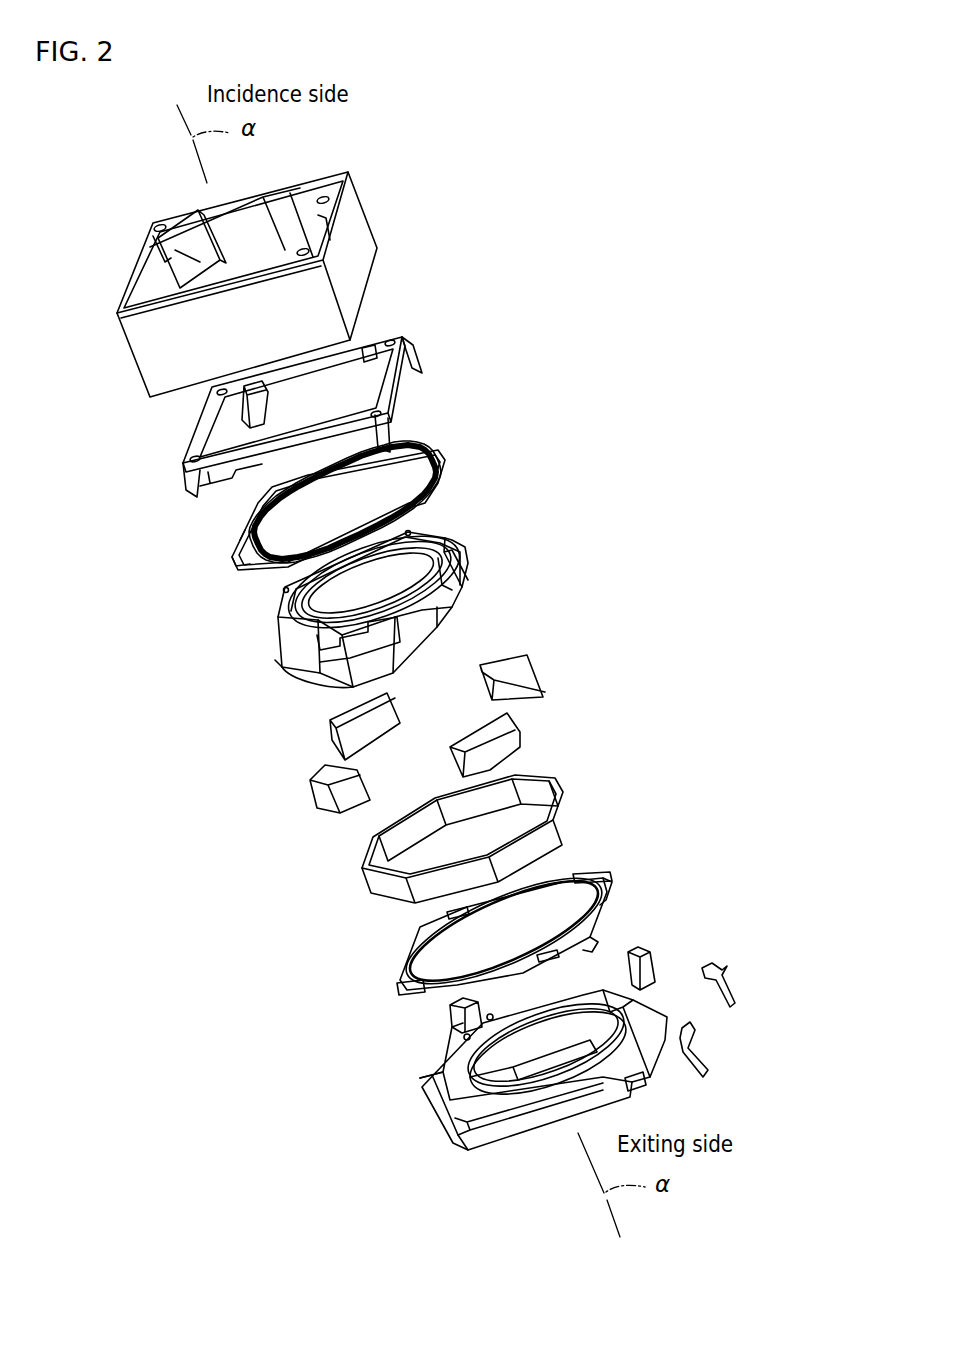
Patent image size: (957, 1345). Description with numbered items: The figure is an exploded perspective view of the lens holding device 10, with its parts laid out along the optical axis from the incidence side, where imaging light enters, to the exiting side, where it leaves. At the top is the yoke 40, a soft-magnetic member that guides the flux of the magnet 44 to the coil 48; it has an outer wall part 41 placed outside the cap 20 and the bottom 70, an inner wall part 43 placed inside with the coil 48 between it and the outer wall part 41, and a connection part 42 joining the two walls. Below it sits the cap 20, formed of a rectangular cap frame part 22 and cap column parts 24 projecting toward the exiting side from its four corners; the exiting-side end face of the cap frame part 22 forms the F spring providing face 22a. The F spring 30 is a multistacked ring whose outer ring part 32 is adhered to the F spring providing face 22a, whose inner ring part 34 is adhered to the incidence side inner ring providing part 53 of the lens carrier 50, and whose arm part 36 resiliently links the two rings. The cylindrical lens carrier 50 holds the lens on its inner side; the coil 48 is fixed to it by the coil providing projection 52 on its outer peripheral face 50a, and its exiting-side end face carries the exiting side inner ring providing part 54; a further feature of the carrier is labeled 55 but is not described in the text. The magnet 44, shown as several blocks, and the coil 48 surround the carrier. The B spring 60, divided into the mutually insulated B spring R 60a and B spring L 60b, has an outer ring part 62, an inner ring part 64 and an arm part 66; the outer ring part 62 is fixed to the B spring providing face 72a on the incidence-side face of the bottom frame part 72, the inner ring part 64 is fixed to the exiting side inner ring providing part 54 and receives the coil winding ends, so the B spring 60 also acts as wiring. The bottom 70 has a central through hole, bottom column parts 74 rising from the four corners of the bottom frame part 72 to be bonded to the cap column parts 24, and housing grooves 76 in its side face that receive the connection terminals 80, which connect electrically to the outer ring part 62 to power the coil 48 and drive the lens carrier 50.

The lens holding device 10 is at (380, 128).
The cap 20 is at (437, 333).
The cap frame part 22 is at (256, 458).
The F spring providing face 22a is at (245, 404).
The cap column part 24 is at (390, 423).
The F spring 30 is at (473, 436).
The outer ring part 32 is at (441, 450).
The inner ring part 34 is at (403, 473).
The arm part 36 is at (238, 546).
The yoke 40 is at (394, 203).
The outer wall part 41 is at (358, 252).
The connection part 42 is at (320, 187).
The inner wall part 43 is at (200, 247).
The magnet 44 is at (512, 663).
The coil 48 is at (565, 793).
The lens carrier 50 is at (492, 524).
The outer peripheral face 50a is at (268, 655).
The coil providing projection 52 is at (387, 637).
The incidence side inner ring providing part 53 is at (413, 532).
The exiting side inner ring providing part 54 is at (303, 677).
The barrel protrusion 55 is at (436, 608).
The B spring 60 is at (605, 852).
The B spring R 60a is at (607, 874).
The B spring L 60b is at (592, 945).
The outer ring part 62 is at (423, 920).
The inner ring part 64 is at (590, 906).
The arm part 66 is at (602, 904).
The bottom 70 is at (673, 957).
The bottom frame part 72 is at (498, 1103).
The B spring providing face 72a is at (632, 988).
The bottom column part 74 is at (450, 1020).
The housing groove 76 is at (663, 993).
The connection terminal 80 is at (733, 975).